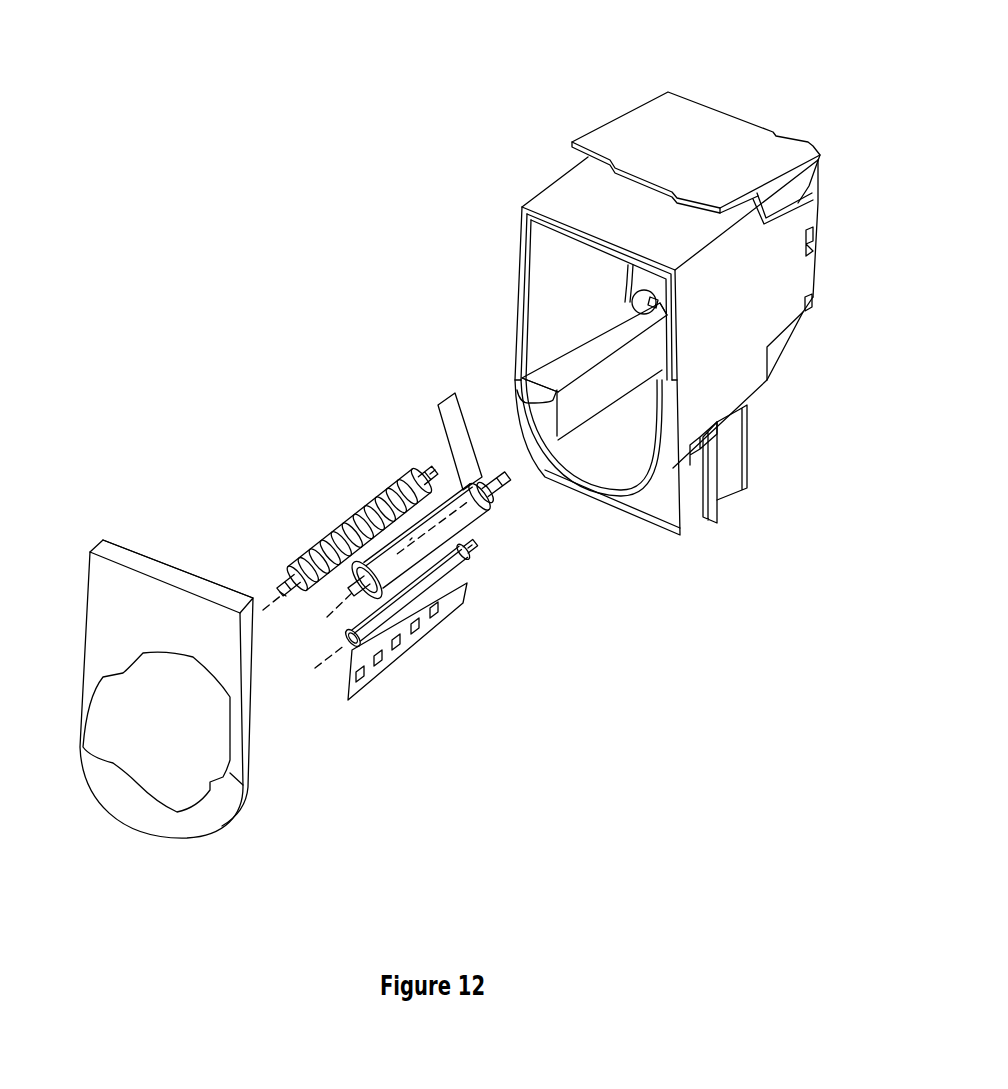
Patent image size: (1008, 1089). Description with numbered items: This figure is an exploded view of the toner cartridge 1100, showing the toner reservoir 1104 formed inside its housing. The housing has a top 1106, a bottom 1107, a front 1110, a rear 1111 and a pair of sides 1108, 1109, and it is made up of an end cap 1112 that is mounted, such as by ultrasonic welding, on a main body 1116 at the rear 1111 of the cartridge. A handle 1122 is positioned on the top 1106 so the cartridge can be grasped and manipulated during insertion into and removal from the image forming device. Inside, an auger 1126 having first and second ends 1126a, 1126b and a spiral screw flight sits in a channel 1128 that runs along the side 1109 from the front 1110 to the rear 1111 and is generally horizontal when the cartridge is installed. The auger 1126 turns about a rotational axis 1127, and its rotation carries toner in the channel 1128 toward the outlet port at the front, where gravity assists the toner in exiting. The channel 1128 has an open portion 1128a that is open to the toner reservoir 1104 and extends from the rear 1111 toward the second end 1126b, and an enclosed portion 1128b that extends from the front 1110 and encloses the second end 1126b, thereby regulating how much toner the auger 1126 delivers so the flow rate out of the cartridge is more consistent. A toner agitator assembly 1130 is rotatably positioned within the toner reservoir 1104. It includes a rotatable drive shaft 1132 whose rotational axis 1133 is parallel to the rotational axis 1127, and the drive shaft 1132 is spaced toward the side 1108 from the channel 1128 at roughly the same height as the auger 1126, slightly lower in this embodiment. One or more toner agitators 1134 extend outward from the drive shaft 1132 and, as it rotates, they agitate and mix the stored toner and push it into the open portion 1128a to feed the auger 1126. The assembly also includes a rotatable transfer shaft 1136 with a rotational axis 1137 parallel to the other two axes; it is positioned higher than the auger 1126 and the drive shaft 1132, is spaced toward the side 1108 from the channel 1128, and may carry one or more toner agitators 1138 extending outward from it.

The toner cartridge 1100 is at (529, 92).
The toner reservoir 1104 is at (608, 467).
The top 1106 is at (563, 195).
The bottom 1107 is at (673, 537).
The side 1108 is at (730, 375).
The side 1109 is at (520, 260).
The front 1110 is at (818, 206).
The rear 1111 is at (110, 627).
The end cap 1112 is at (117, 552).
The main body 1116 is at (788, 275).
The handle 1122 is at (703, 122).
The auger 1126 is at (322, 552).
The first end 1126a is at (277, 590).
The second end 1126b is at (430, 475).
The rotational axis 1127 is at (452, 462).
The channel 1128 is at (598, 326).
The open portion 1128a is at (548, 374).
The enclosed portion 1128b is at (630, 311).
The toner agitator assembly 1130 is at (490, 578).
The drive shaft 1132 is at (447, 567).
The rotational axis 1133 is at (480, 533).
The toner agitators 1134 is at (418, 640).
The transfer shaft 1136 is at (410, 540).
The rotational axis 1137 is at (318, 622).
The toner agitators 1138 is at (460, 403).